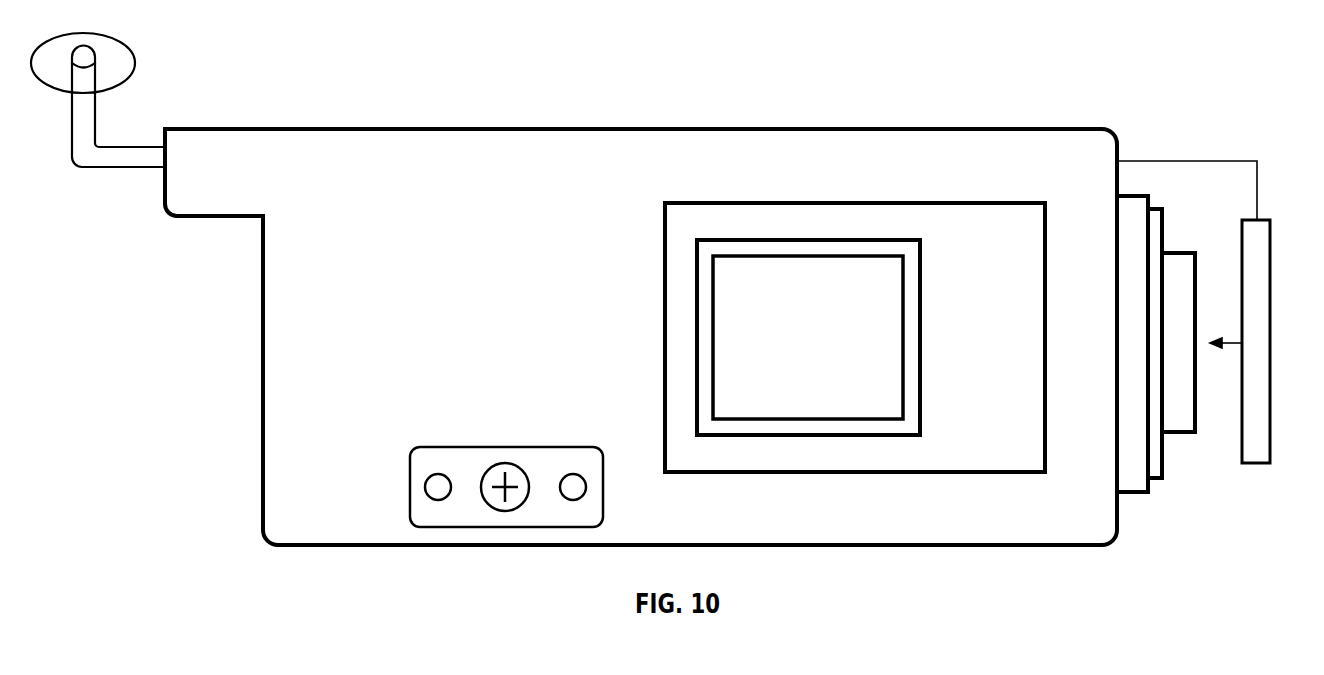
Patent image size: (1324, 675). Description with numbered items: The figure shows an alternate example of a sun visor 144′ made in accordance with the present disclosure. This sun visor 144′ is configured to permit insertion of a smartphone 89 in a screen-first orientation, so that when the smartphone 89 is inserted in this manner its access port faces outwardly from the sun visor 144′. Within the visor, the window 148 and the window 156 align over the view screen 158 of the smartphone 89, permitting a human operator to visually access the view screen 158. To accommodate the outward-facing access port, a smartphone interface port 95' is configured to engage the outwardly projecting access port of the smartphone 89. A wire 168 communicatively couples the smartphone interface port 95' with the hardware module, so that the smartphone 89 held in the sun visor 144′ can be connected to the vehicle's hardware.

The sun visor 144′ is at (633, 125).
The window 148 is at (855, 202).
The window 156 is at (808, 238).
The view screen 158 is at (803, 385).
The wire 168 is at (1193, 157).
The smartphone 89 is at (1178, 435).
The smartphone interface port 95' is at (1275, 359).